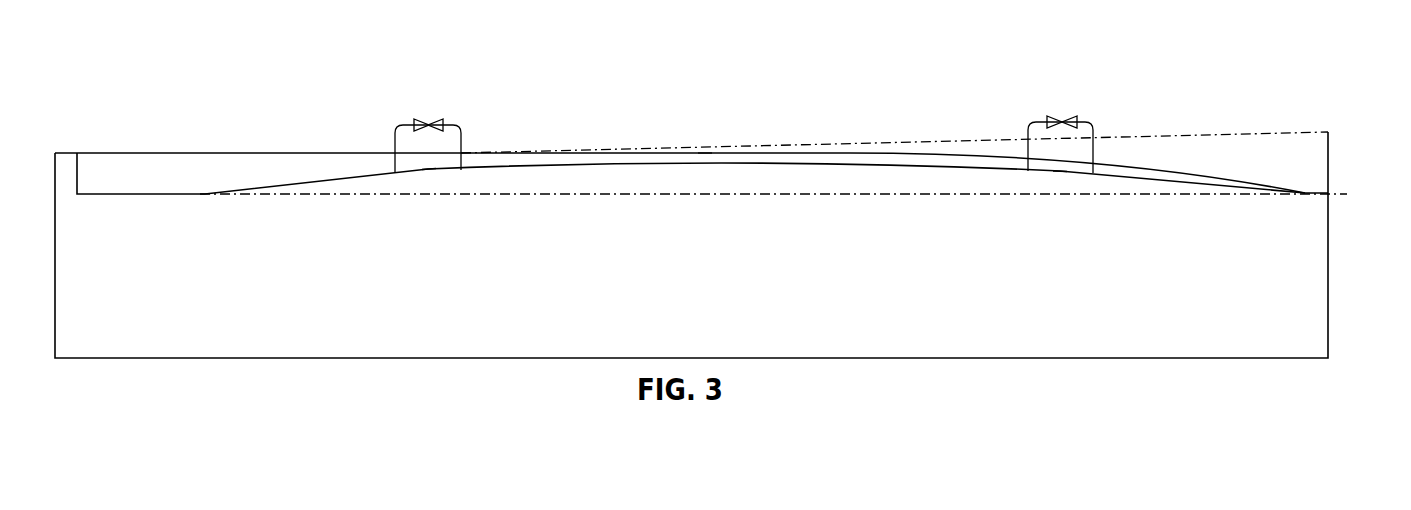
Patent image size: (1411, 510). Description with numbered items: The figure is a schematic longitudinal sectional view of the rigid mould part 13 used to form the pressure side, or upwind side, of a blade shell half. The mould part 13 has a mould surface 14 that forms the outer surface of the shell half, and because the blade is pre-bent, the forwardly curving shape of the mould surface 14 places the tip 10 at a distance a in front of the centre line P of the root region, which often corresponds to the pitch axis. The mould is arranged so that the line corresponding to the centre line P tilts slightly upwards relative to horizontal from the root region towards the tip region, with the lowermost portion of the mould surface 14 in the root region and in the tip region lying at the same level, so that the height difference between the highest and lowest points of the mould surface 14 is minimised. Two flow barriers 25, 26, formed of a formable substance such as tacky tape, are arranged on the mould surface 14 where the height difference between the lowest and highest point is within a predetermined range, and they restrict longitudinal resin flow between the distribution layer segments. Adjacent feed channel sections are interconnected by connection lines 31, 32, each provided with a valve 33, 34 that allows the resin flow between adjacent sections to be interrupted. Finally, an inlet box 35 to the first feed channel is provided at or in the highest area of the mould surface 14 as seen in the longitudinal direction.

The tip 10 is at (1305, 191).
The rigid mould part 13 is at (722, 295).
The mould surface 14 is at (288, 183).
The flow barrier 25 is at (428, 171).
The flow barrier 26 is at (1063, 173).
The connection line 31 is at (408, 124).
The connection line 32 is at (1043, 122).
The valve 33 is at (438, 122).
The valve 34 is at (1071, 120).
The inlet box 35 is at (705, 157).
The centre line p is at (1257, 132).
The distance a is at (1333, 163).